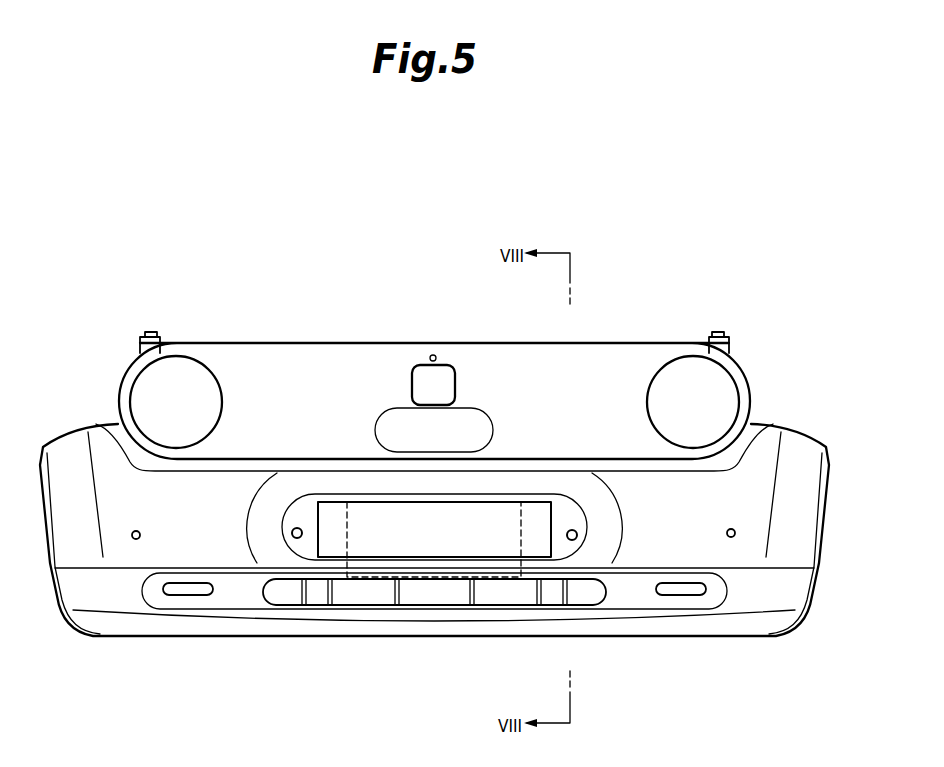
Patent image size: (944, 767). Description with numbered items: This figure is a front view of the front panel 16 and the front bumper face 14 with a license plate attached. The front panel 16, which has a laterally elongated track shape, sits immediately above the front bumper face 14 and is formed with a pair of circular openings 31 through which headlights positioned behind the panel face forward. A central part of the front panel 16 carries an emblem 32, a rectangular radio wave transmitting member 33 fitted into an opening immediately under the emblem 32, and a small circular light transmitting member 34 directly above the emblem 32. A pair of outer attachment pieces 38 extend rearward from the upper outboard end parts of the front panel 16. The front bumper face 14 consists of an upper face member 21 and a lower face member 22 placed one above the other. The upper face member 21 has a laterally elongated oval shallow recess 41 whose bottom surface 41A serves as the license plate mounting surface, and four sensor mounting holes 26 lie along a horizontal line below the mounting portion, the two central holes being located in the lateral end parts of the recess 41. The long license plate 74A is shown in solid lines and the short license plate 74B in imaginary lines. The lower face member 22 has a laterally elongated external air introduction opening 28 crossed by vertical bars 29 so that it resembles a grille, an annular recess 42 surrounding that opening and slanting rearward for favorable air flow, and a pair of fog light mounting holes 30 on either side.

The front bumper face 14 is at (597, 640).
The front panel 16 is at (556, 341).
The upper face member 21 is at (808, 490).
The lower face member 22 is at (790, 589).
The sensor mounting hole 26 is at (136, 531).
The external air introduction opening 28 is at (362, 606).
The vertical bar 29 is at (332, 594).
The fog light mounting hole 30 is at (180, 596).
The circular opening 31 is at (168, 362).
The emblem 32 is at (422, 382).
The radio wave transmitting member 33 is at (392, 418).
The light transmitting member 34 is at (438, 357).
The outer attachment piece 38 is at (142, 345).
The recess 41 is at (626, 525).
The bottom surface of the recess 41A is at (563, 503).
The annular recess 42 is at (726, 614).
The long license plate 74A is at (313, 512).
The short license plate 74B is at (347, 532).